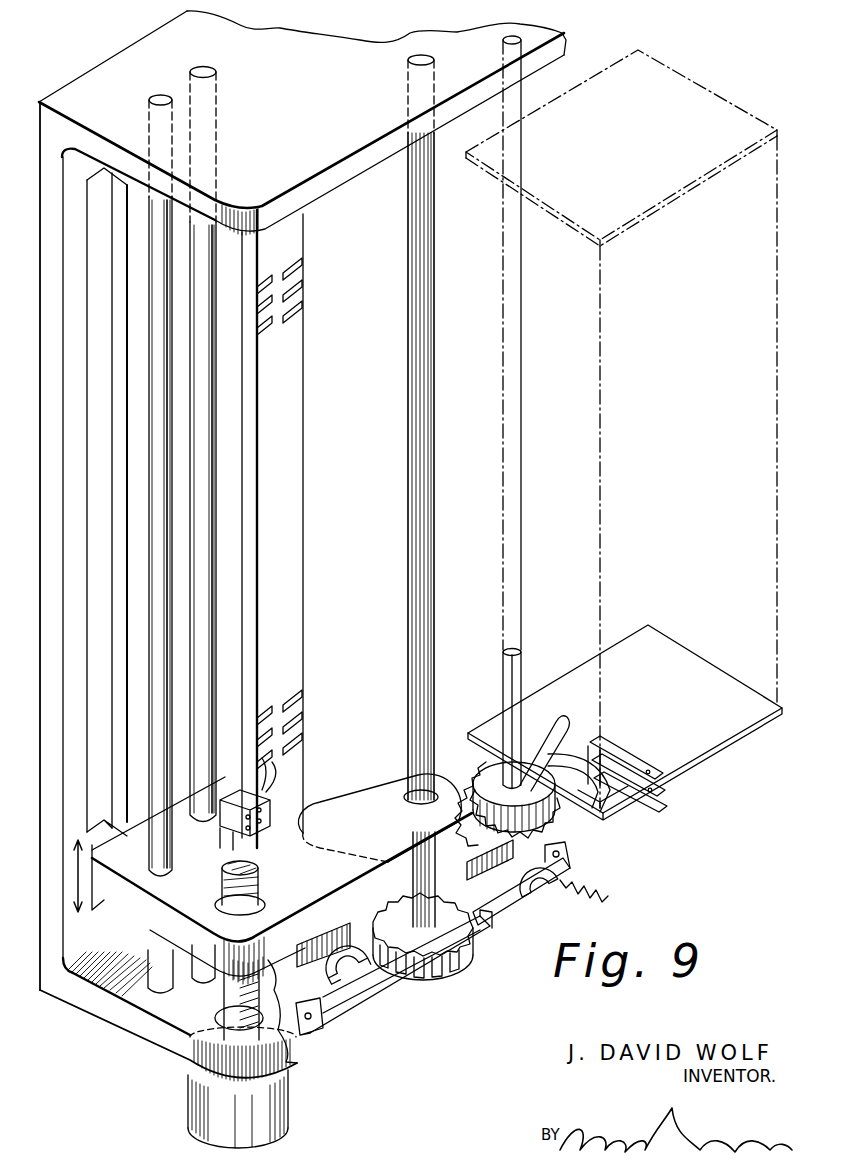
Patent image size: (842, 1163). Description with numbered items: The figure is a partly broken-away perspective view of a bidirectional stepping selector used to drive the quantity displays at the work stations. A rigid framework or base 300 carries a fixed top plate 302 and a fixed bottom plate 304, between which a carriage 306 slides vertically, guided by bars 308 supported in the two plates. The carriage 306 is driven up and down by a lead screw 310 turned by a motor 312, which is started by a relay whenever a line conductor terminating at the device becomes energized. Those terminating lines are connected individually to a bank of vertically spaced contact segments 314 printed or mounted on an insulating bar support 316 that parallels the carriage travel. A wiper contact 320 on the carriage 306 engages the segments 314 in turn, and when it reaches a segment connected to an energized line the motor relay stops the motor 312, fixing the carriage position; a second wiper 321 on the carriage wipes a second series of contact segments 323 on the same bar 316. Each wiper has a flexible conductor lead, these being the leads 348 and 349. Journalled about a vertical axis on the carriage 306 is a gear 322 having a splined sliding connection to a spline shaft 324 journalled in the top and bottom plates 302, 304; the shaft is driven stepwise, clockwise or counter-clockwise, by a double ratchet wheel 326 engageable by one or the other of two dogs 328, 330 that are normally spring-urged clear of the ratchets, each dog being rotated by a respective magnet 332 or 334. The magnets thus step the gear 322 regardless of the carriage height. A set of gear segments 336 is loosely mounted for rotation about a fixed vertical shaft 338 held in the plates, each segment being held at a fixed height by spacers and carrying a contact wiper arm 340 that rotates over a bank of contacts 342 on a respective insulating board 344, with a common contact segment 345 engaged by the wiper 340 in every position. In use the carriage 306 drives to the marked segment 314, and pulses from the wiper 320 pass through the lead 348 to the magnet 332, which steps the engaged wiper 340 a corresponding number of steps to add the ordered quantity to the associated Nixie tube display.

The framework or base 300 is at (168, 591).
The top plate 302 is at (326, 141).
The bottom plate 304 is at (210, 1016).
The carriage 306 is at (305, 884).
The bars 308 is at (165, 458).
The lead screw 310 is at (224, 887).
The motor 312 is at (282, 1115).
The contact segments 314 is at (290, 266).
The insulating bar support 316 is at (297, 515).
The wiper contact 320 is at (284, 752).
The second wiper 321 is at (272, 768).
The gear 322 is at (470, 780).
The second series of contact segments 323 is at (263, 303).
The spline shaft 324 is at (428, 580).
The double ratchet wheel 326 is at (462, 966).
The dog 328 is at (365, 992).
The dog 330 is at (500, 900).
The magnet 332 is at (348, 936).
The magnet 334 is at (480, 870).
The gear segments 336 is at (548, 806).
The fixed vertical shaft 338 is at (507, 672).
The contact wiper arm 340 is at (548, 730).
The bank of contacts 342 is at (596, 745).
The insulating board 344 is at (688, 190).
The common contact segment 345 is at (610, 788).
The lead 348 is at (217, 836).
The lead 349 is at (236, 840).